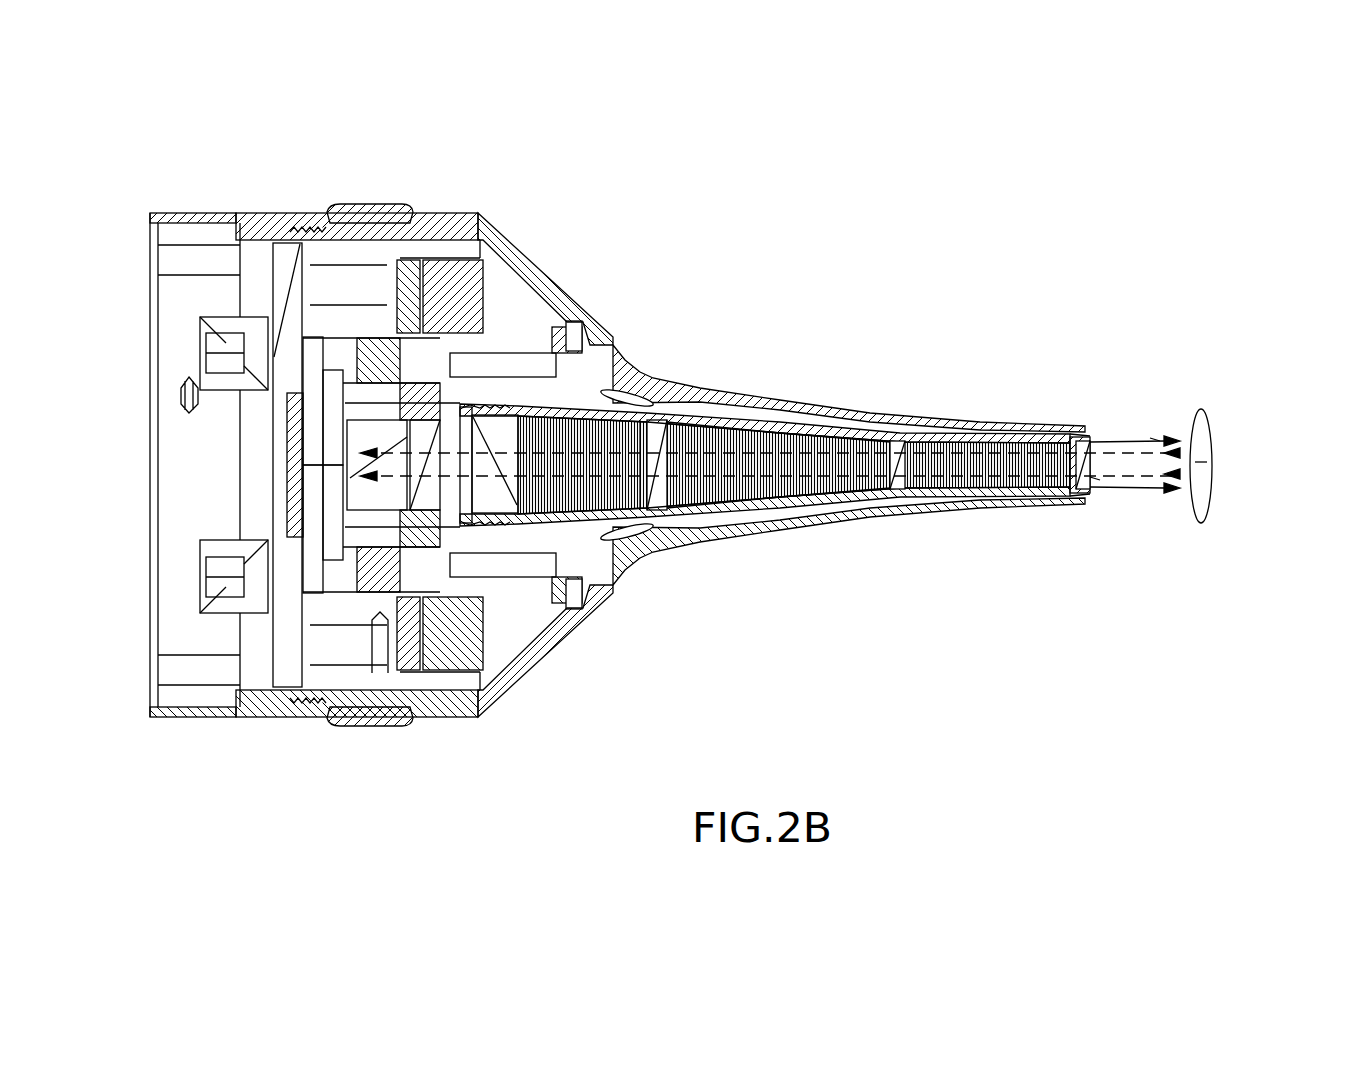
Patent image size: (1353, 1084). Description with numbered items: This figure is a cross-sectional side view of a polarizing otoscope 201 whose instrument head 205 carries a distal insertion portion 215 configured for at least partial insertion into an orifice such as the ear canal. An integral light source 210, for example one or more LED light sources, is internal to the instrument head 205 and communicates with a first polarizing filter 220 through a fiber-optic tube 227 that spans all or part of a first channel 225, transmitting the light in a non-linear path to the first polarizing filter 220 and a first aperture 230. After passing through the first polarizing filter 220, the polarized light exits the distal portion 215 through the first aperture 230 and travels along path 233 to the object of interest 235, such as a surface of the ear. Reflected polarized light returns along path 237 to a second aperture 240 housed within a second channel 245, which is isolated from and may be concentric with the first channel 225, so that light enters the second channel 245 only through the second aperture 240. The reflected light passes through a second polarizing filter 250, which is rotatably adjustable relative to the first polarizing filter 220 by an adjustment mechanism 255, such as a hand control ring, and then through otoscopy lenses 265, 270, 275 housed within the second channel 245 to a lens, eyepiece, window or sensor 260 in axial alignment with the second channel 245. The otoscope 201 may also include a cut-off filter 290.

The otoscope 201 is at (698, 216).
The instrument head 205 is at (348, 272).
The light source 210 is at (440, 270).
The distal insertion portion 215 is at (1092, 455).
The first polarizing filter 220 is at (1088, 437).
The first channel 225 is at (797, 420).
The fiber-optic tube 227 is at (723, 410).
The first aperture 230 is at (1090, 436).
The polarized light path 233 is at (1150, 438).
The object of interest 235 is at (1200, 498).
The reflected light path 237 is at (1200, 460).
The second aperture 240 is at (1090, 477).
The second channel 245 is at (840, 463).
The second polarizing filter 250 is at (428, 438).
The adjustment mechanism 255 is at (370, 717).
The lens, eyepiece, window and/or sensor 260 is at (310, 440).
The otoscopy lens 265 is at (1072, 470).
The otoscopy lens 270 is at (893, 477).
The otoscopy lens 275 is at (650, 493).
The filter 290 is at (445, 605).